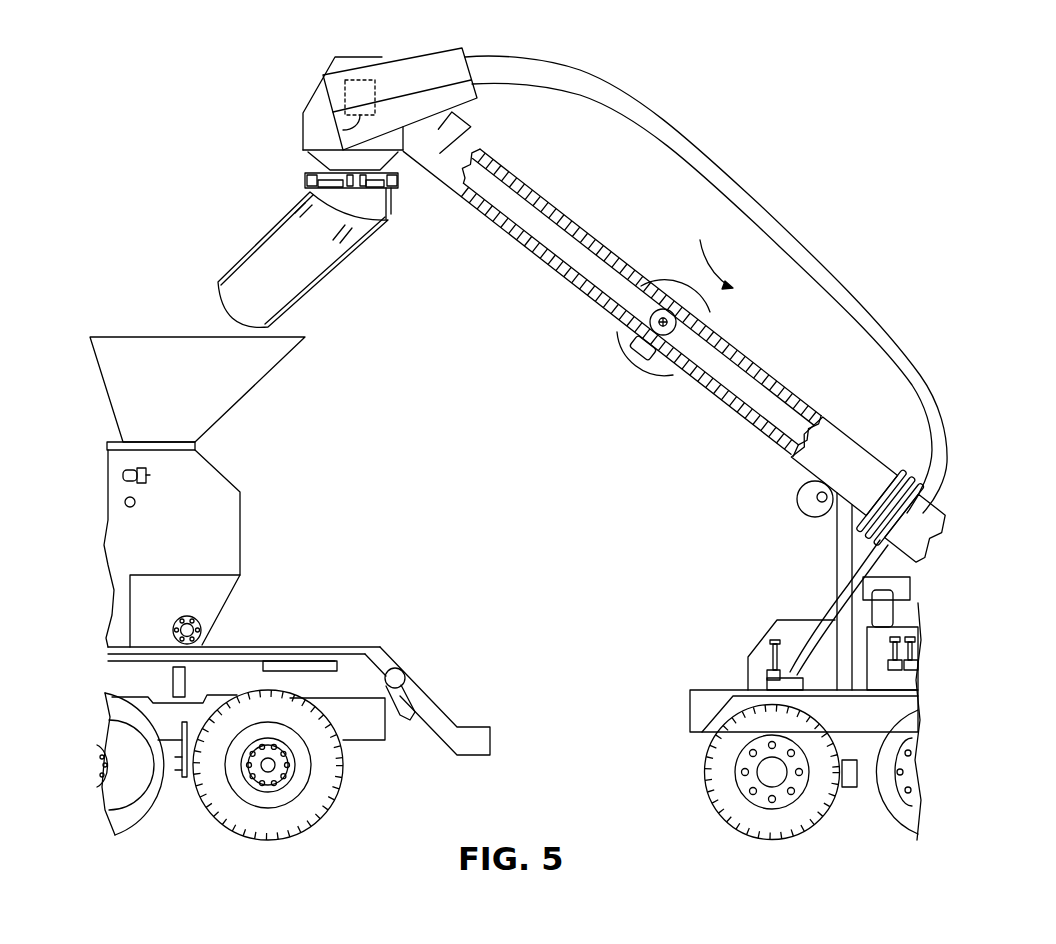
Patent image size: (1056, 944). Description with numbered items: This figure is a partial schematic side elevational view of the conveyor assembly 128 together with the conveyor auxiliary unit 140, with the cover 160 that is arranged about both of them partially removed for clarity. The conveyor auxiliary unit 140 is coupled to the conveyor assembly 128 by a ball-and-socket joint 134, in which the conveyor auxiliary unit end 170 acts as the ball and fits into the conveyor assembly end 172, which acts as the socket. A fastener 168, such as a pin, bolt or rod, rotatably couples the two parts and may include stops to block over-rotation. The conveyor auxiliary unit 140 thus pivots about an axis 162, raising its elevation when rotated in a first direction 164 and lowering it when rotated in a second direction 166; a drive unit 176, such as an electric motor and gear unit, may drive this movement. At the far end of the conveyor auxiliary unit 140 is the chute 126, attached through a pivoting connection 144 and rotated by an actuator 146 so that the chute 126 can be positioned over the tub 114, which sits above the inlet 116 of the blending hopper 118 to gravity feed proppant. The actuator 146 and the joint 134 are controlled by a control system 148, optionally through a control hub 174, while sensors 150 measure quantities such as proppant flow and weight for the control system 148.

The tub 114 is at (230, 393).
The inlet 116 is at (150, 442).
The blending hopper 118 is at (211, 546).
The chute 126 is at (282, 250).
The conveyor assembly 128 is at (815, 326).
The joint 134 is at (700, 270).
The conveyor auxiliary unit 140 is at (522, 278).
The pivoting connection 144 is at (328, 173).
The actuator 146 is at (345, 128).
The control system 148 is at (700, 665).
The sensors 150 is at (150, 475).
The cover 160 is at (843, 432).
The axis 162 is at (653, 363).
The first direction 164 is at (742, 272).
The second direction 166 is at (697, 270).
The fastener 168 is at (650, 315).
The conveyor auxiliary unit end 170 is at (708, 320).
The conveyor assembly end 172 is at (685, 380).
The control hub 174 is at (428, 66).
The drive unit 176 is at (637, 358).